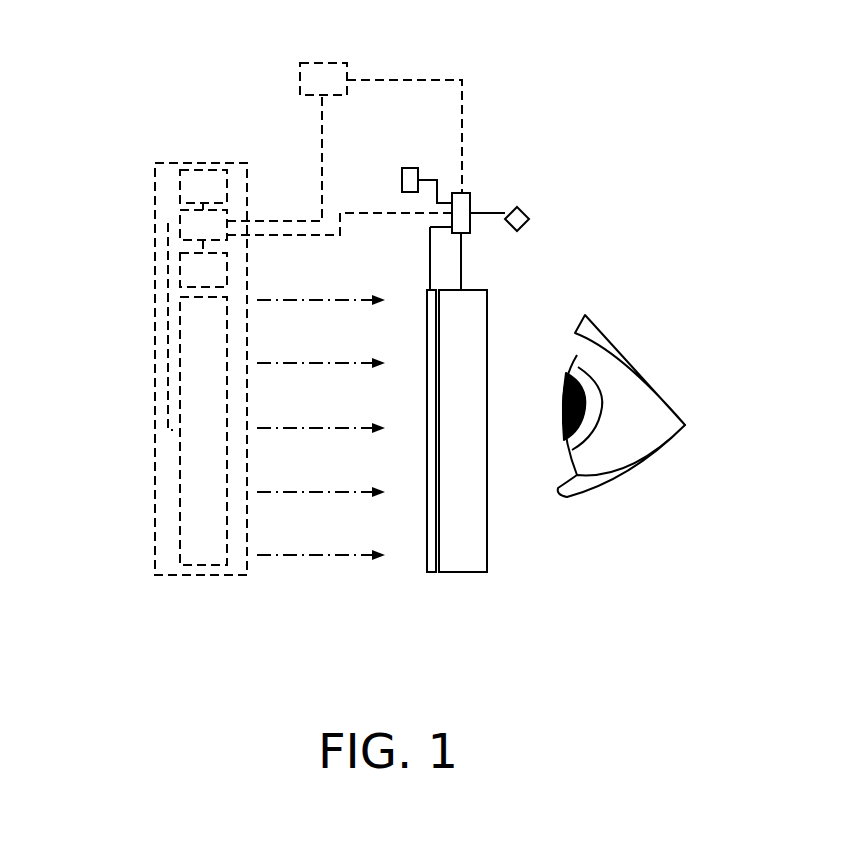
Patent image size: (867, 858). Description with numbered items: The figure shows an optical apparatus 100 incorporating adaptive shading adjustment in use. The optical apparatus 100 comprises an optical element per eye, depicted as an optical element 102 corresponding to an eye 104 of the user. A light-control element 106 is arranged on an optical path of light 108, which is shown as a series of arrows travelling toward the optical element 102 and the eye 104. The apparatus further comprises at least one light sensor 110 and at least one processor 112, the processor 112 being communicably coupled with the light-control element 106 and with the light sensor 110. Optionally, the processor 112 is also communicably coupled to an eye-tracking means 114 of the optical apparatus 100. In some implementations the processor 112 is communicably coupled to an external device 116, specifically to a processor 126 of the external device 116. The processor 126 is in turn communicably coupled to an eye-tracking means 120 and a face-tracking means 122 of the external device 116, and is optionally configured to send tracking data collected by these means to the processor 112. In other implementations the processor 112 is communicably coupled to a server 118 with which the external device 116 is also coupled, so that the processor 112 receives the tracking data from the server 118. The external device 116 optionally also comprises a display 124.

The optical apparatus 100 is at (517, 148).
The optical element 102 is at (460, 575).
The eye 104 is at (618, 482).
The light-control element 106 is at (428, 575).
The light 108 is at (328, 300).
The light sensor 110 is at (402, 178).
The processor 112 is at (470, 197).
The eye-tracking means 114 is at (527, 226).
The external device 116 is at (176, 163).
The server 118 is at (300, 70).
The eye-tracking means 120 is at (180, 183).
The face-tracking means 122 is at (180, 268).
The display 124 is at (180, 362).
The processor 126 is at (180, 215).